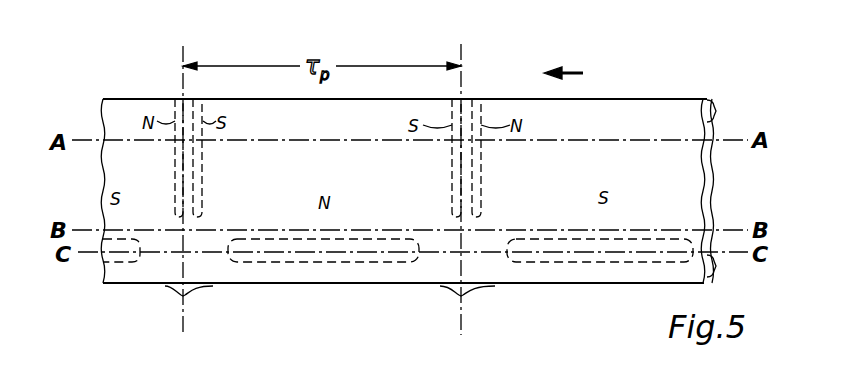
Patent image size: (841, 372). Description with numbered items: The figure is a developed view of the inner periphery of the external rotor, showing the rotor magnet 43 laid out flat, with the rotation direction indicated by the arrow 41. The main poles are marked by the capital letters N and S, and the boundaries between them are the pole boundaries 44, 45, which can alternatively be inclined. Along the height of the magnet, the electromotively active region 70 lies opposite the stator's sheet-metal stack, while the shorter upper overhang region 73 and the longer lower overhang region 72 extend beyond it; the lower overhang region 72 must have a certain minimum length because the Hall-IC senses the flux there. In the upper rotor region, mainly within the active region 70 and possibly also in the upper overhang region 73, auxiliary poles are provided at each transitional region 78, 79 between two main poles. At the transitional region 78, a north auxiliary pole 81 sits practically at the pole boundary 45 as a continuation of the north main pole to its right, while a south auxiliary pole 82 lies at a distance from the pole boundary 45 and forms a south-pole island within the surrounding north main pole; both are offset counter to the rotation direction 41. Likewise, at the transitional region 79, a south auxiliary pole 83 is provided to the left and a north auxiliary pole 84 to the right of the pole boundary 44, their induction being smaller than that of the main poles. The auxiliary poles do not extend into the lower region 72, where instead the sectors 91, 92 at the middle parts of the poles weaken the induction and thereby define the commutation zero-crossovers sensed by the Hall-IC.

The rotation direction 41 is at (584, 73).
The rotor magnet 43 is at (690, 90).
The pole boundary 44 is at (463, 65).
The pole boundary 45 is at (180, 64).
The electromotively active region 70 is at (713, 171).
The overhang region 72 is at (726, 267).
The overhang region 73 is at (727, 113).
The transitional region 78 is at (186, 296).
The transitional region 79 is at (463, 296).
The north auxiliary pole 81 is at (175, 170).
The south auxiliary pole 82 is at (202, 170).
The south auxiliary pole 83 is at (452, 180).
The north auxiliary pole 84 is at (481, 178).
The sector 91 is at (330, 265).
The sector 92 is at (118, 265).